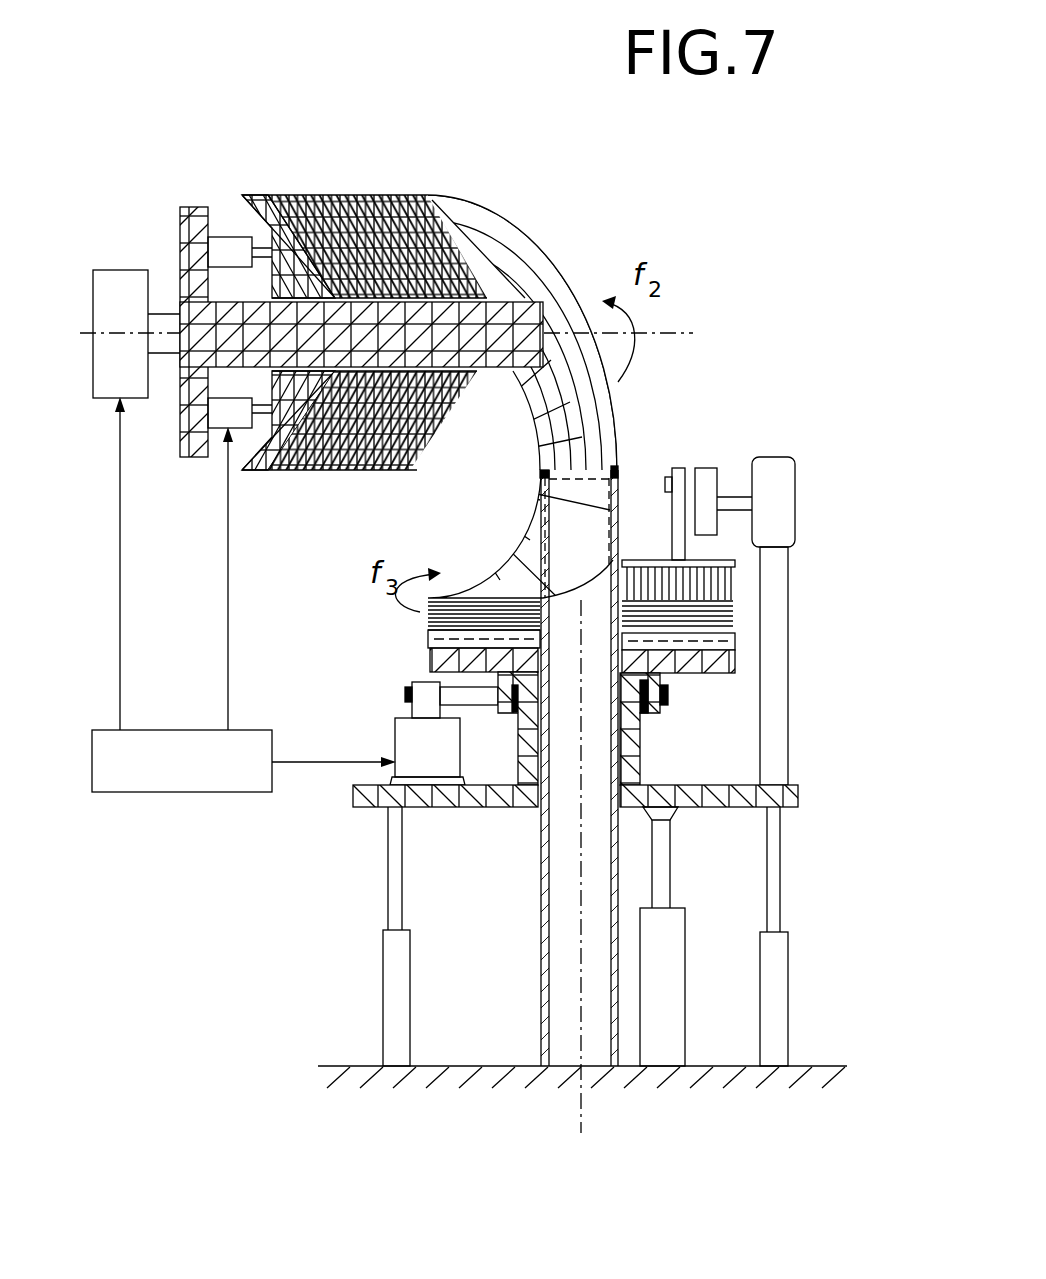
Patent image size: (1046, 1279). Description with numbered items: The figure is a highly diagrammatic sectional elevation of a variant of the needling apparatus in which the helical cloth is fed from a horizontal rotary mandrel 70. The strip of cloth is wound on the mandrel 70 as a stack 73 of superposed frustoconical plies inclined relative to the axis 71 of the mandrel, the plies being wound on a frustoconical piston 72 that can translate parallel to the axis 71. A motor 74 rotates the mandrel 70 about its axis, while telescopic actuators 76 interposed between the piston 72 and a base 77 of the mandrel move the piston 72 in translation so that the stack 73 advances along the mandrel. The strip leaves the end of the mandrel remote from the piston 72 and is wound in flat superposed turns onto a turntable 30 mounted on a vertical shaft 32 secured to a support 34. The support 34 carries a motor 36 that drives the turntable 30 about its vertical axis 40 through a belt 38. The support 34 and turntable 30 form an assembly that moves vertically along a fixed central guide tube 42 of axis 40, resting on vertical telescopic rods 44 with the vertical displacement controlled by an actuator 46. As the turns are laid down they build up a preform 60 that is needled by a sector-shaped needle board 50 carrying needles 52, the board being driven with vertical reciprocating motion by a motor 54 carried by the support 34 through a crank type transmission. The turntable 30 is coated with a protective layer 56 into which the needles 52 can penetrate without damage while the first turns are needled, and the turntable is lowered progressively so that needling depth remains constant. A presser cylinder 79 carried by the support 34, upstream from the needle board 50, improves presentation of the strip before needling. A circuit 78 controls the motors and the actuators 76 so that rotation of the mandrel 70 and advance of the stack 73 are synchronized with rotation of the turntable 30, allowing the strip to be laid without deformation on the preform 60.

The turntable 30 is at (732, 672).
The vertical shaft 32 is at (640, 750).
The support 34 is at (780, 797).
The motor 36 is at (415, 738).
The belt 38 is at (463, 690).
The vertical axis 40 is at (580, 862).
The central guide tube 42 is at (545, 947).
The telescopic rods 44 is at (395, 978).
The actuator 46 is at (668, 984).
The needle board 50 is at (641, 560).
The needles 52 is at (728, 585).
The motor 54 is at (782, 512).
The protective layer 56 is at (430, 645).
The preform 60 is at (730, 617).
The rotary mandrel 70 is at (527, 303).
The axis of the mandrel 71 is at (675, 333).
The frustoconical piston 72 is at (293, 420).
The stack of frustoconical plies 73 is at (433, 428).
The motor 74 is at (113, 285).
The telescopic actuators 76 is at (223, 248).
The base of the mandrel 77 is at (180, 452).
The control circuit 78 is at (220, 770).
The presser cylinder 79 is at (512, 585).